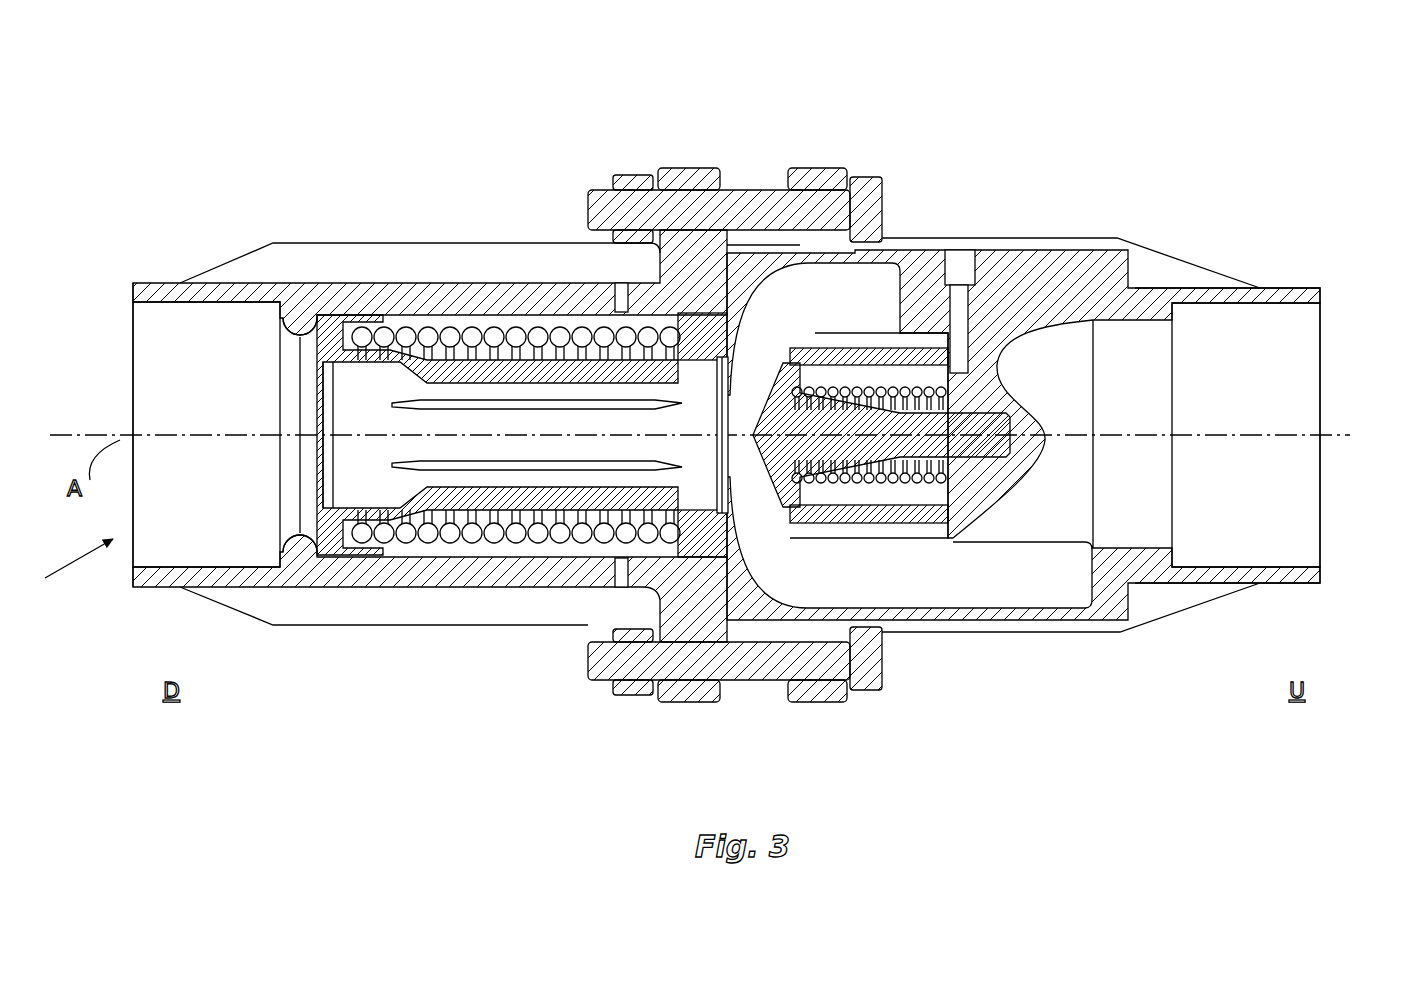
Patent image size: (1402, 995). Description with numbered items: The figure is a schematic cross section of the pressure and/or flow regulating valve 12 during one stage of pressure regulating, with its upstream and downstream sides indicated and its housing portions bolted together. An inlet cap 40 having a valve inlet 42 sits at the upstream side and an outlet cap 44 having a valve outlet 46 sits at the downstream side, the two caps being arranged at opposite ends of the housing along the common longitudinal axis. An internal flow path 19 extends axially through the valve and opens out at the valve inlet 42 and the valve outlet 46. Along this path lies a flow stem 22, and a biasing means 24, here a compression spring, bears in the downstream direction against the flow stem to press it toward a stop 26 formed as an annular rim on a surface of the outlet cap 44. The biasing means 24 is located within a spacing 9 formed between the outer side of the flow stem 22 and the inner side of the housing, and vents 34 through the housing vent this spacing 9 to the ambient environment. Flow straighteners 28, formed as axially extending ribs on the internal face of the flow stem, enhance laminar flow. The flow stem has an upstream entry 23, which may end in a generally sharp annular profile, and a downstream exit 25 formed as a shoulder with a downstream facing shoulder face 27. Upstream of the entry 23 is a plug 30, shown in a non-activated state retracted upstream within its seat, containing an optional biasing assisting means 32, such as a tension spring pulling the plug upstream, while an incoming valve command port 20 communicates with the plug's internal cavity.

The pressure and/or flow regulating valve 12 is at (316, 128).
The outlet cap 44 is at (185, 330).
The internal flow path 19 is at (150, 361).
The downstream exit 25 is at (315, 450).
The valve outlet 46 is at (64, 571).
The vents 34 is at (626, 290).
The upstream entry 23 is at (737, 425).
The incoming valve command port 20 is at (965, 270).
The inlet cap 40 is at (1258, 340).
The valve inlet 42 is at (1336, 545).
The flow stem 22 is at (356, 435).
The plug 30 is at (881, 435).
The stop 26 is at (280, 510).
The downstream facing shoulder face 27 is at (302, 540).
The spacing 9 is at (397, 552).
The biasing means 24 is at (490, 542).
The flow straighteners 28 is at (620, 470).
The biasing assisting means 32 is at (880, 480).